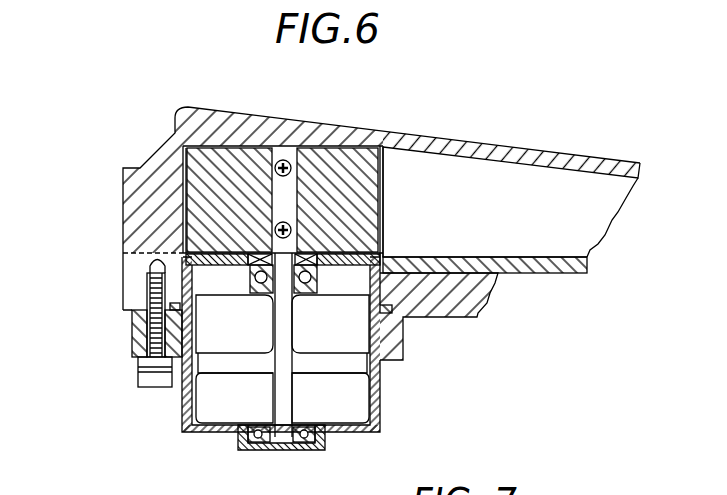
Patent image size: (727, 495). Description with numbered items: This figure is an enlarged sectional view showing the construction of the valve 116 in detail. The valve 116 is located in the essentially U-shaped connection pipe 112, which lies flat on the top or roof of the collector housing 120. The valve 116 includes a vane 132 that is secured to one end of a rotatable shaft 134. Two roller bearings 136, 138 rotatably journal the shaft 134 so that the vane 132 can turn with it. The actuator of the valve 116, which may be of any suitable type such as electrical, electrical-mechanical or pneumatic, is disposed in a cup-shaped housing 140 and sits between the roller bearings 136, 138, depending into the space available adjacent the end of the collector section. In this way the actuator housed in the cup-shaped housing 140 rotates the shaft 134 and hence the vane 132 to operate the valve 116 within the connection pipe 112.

The connection pipe 112 is at (473, 200).
The valve 116 is at (178, 162).
The collector housing 120 is at (550, 150).
The vane 132 is at (228, 153).
The rotatable shaft 134 is at (140, 343).
The roller bearing 136 is at (147, 285).
The roller bearing 138 is at (290, 450).
The cup-shaped housing 140 is at (380, 410).